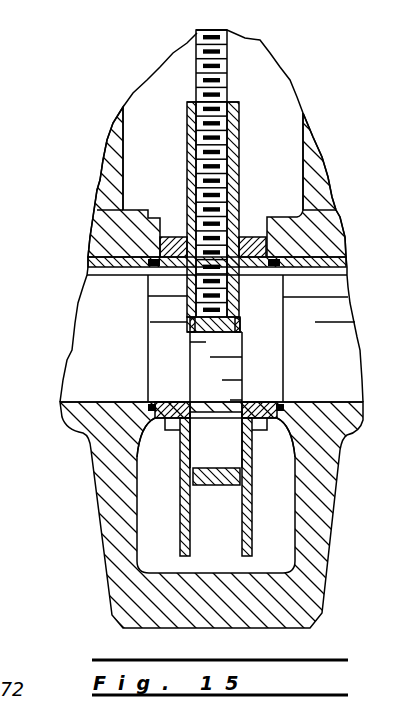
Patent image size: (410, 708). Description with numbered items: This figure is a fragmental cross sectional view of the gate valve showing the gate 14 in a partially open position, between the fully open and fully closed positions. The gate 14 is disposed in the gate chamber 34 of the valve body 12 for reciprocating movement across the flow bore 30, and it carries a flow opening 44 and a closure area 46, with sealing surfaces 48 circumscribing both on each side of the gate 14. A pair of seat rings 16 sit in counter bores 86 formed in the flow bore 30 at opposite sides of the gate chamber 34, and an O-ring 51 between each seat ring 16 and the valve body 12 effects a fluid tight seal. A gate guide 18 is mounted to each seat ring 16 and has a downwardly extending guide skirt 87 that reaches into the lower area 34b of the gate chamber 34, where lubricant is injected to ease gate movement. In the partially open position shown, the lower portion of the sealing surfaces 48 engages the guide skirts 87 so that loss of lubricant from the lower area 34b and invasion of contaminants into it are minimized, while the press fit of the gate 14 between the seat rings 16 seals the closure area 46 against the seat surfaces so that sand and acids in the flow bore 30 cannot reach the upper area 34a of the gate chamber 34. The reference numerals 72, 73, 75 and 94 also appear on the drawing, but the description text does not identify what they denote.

The valve body 12 is at (321, 600).
The gate 14 is at (190, 185).
The seat ring 16 is at (195, 268).
The gate guide 18 is at (150, 222).
The flow bore 30 is at (100, 347).
The gate chamber 34 is at (270, 166).
The upper area of the gate chamber 34a is at (276, 105).
The lower area of the gate chamber 34b is at (230, 553).
The flow opening 44 is at (226, 450).
The closure area 46 is at (162, 235).
The sealing surfaces 48 is at (123, 130).
The O-ring 51 is at (160, 252).
The spring end 72 is at (228, 36).
The spring guide 73 is at (187, 127).
The coil spring 75 is at (200, 65).
The counter bore 86 is at (147, 270).
The guide skirt 87 is at (178, 522).
The port 94 is at (150, 296).